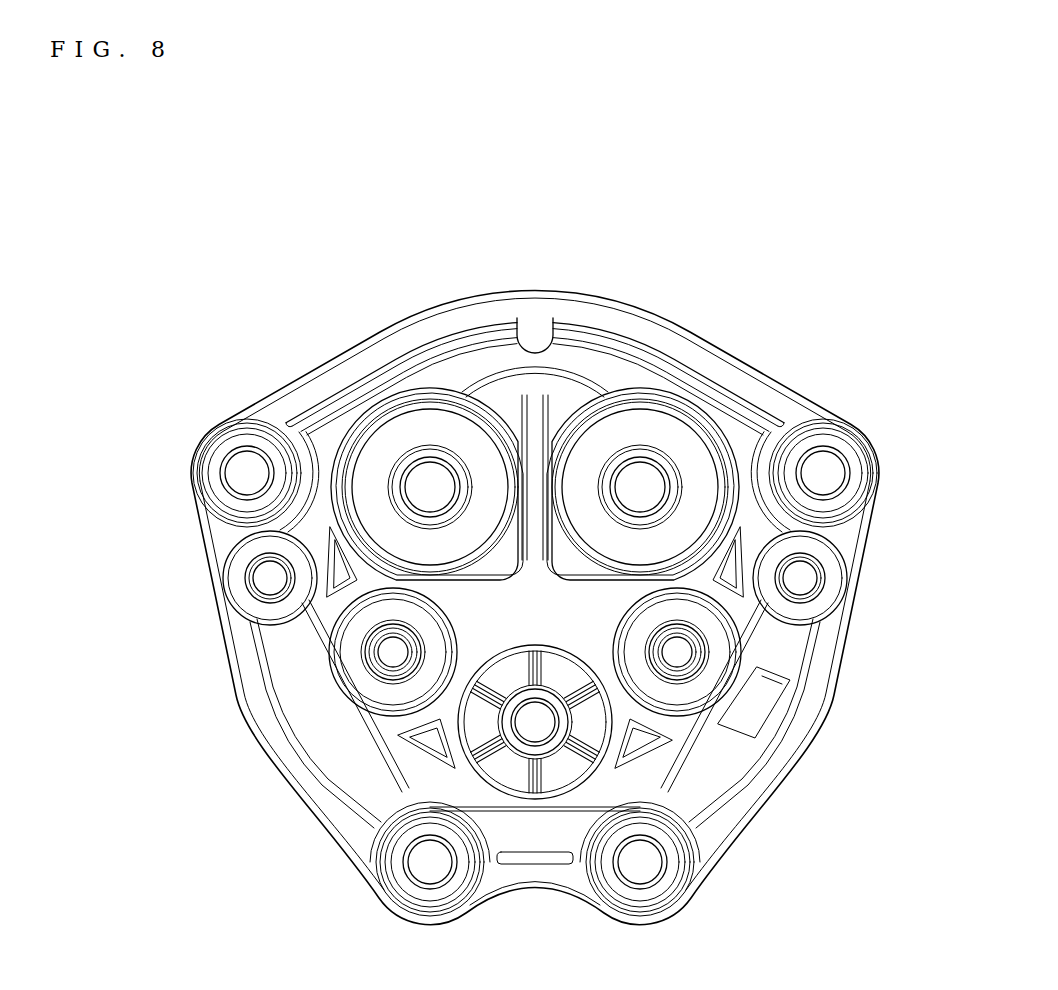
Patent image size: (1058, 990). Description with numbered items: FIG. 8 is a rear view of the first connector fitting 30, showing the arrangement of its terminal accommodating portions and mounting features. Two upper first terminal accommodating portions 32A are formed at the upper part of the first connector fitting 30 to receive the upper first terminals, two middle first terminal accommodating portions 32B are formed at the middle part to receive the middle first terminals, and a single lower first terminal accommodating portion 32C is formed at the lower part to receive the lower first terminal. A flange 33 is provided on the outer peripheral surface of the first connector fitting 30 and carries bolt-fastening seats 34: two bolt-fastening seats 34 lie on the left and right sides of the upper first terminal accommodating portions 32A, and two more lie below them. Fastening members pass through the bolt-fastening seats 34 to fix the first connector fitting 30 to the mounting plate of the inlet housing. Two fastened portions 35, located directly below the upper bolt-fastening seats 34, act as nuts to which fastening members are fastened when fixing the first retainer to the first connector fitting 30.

The first connector fitting 30 is at (527, 190).
The upper first terminal accommodating portions 32A is at (410, 462).
The middle first terminal accommodating portions 32B is at (382, 668).
The lower first terminal accommodating portion 32C is at (527, 745).
The flange 33 is at (578, 312).
The bolt-fastening seats 34 is at (227, 447).
The fastened portions 35 is at (238, 580).